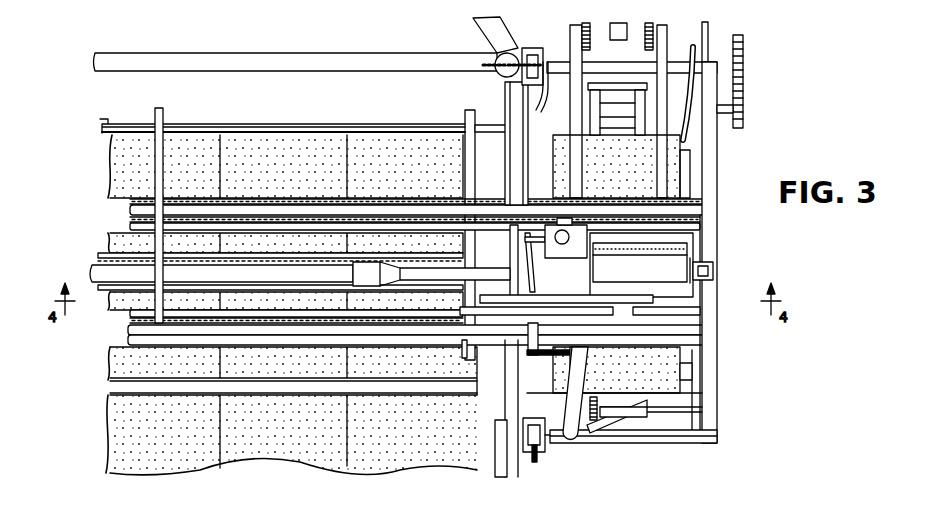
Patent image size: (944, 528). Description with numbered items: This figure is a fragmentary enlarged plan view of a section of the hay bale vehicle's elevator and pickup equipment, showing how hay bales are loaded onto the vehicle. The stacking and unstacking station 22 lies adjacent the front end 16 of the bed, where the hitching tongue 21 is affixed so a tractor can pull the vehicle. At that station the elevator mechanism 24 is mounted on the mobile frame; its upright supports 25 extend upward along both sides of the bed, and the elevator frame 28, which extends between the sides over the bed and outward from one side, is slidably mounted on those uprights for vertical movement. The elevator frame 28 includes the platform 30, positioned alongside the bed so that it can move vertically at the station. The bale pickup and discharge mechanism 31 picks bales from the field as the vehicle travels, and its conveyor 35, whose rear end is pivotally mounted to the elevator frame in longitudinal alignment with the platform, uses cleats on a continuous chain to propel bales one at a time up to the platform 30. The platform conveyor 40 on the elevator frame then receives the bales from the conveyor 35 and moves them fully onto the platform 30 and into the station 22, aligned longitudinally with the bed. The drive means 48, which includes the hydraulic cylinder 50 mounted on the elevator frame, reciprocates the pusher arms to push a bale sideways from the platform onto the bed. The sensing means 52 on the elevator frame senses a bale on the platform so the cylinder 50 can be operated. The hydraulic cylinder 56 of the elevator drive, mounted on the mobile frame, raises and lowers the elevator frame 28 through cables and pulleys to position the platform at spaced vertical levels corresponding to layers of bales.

The front end 16 is at (283, 128).
The hitching tongue 21 is at (195, 52).
The stacking and unstacking station 22 is at (400, 110).
The elevator mechanism 24 is at (718, 186).
The upright supports 25 is at (530, 48).
The elevator frame 28 is at (287, 208).
The platform 30 is at (688, 366).
The bale pickup and discharge mechanism 31 is at (667, 33).
The conveyor 35 is at (586, 24).
The platform conveyor 40 is at (645, 113).
The drive means 48 is at (677, 269).
The hydraulic cylinder 50 is at (629, 265).
The sensing means 52 is at (655, 412).
The hydraulic cylinder 56 is at (497, 74).